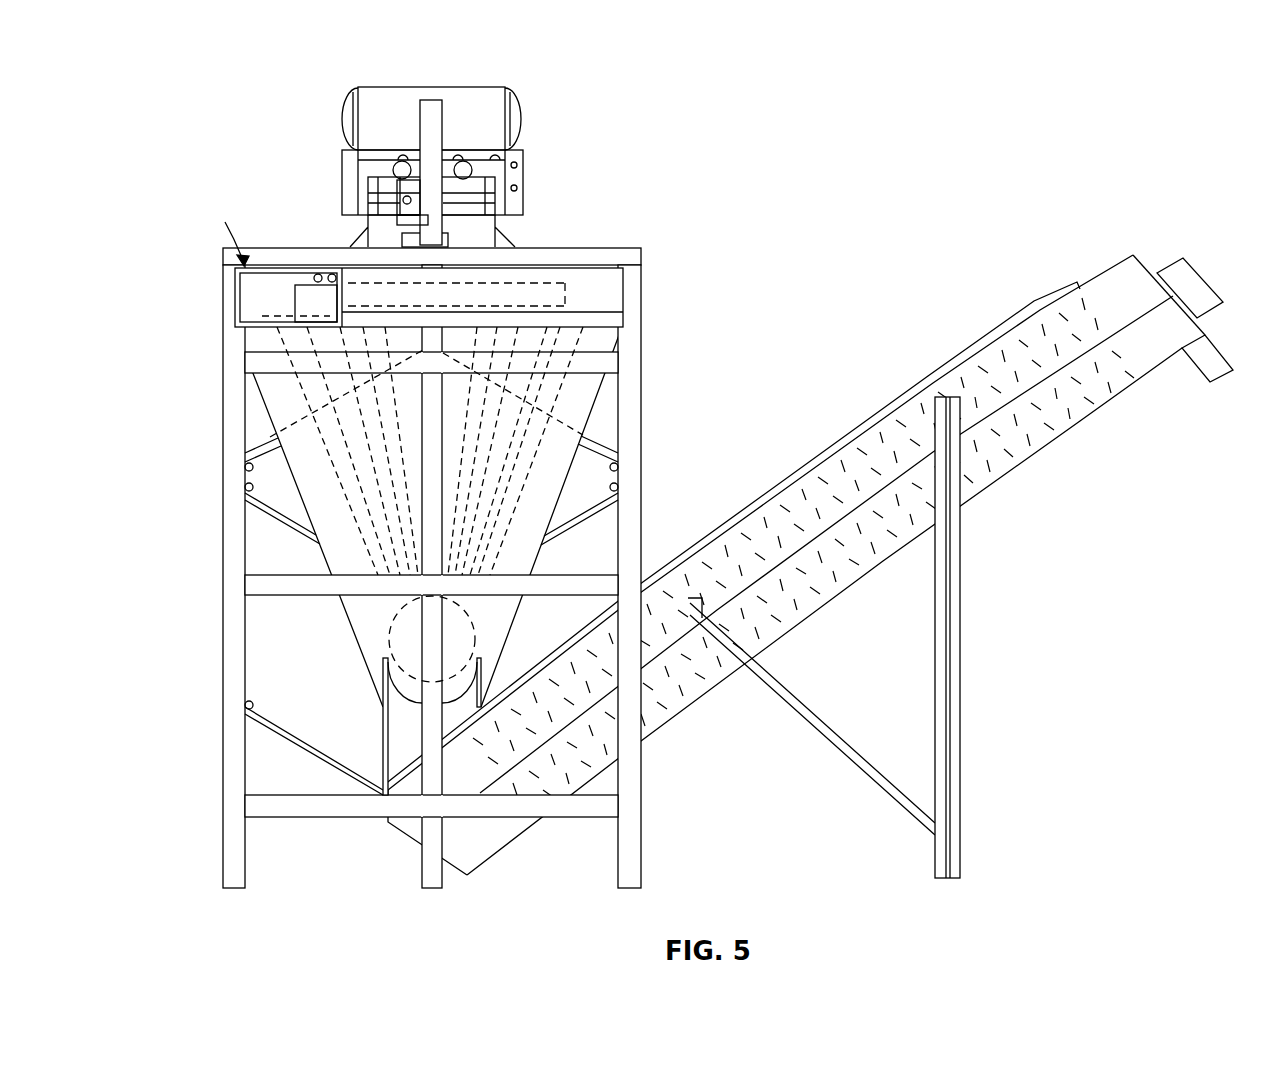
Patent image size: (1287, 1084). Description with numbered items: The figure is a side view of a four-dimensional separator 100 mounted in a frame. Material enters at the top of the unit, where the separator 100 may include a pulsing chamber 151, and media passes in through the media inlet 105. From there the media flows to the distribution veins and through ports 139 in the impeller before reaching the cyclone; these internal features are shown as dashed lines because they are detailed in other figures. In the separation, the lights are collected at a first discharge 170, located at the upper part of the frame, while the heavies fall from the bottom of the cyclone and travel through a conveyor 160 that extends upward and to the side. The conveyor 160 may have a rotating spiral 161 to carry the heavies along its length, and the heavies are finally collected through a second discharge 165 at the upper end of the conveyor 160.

The separator 100 is at (779, 161).
The media inlet 105 is at (433, 110).
The pulsing chamber 151 is at (497, 100).
The first discharge 170 is at (252, 302).
The ports 139 is at (486, 477).
The conveyor 160 is at (857, 450).
The rotating spiral 161 is at (990, 457).
The second discharge 165 is at (1230, 392).